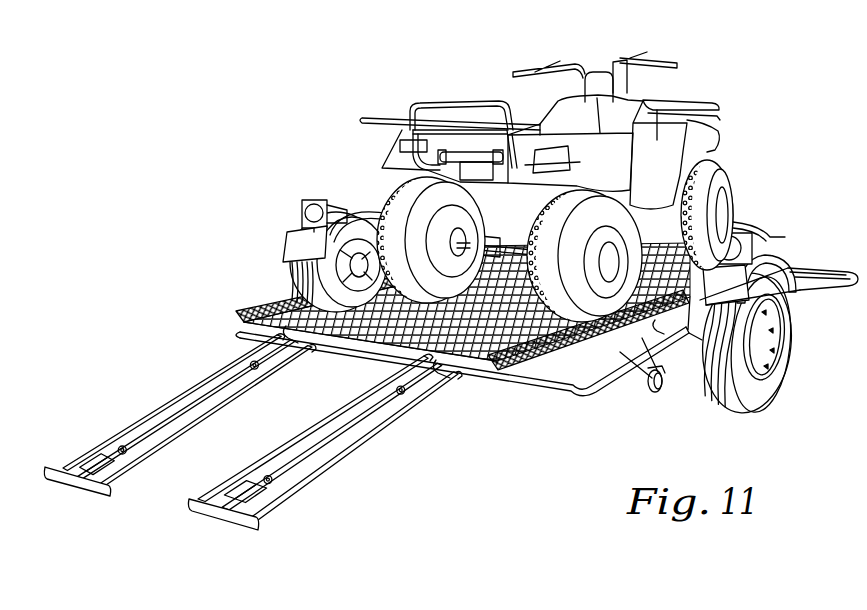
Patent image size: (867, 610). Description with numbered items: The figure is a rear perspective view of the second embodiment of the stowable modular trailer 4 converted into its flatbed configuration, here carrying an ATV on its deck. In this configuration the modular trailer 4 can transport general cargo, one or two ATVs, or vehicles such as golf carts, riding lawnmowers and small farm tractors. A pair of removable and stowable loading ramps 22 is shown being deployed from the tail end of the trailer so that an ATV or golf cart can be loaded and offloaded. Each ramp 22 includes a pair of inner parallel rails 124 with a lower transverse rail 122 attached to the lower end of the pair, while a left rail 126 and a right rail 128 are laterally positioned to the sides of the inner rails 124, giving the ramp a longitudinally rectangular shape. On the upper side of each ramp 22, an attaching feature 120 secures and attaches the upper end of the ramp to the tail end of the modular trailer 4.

The stowable modular trailer 4 is at (197, 121).
The loading ramp 22 is at (176, 380).
The attaching feature 120 is at (289, 321).
The lower transverse rail 122 is at (90, 488).
The inner parallel rails 124 is at (312, 467).
The left rail 126 is at (257, 465).
The right rail 128 is at (286, 503).